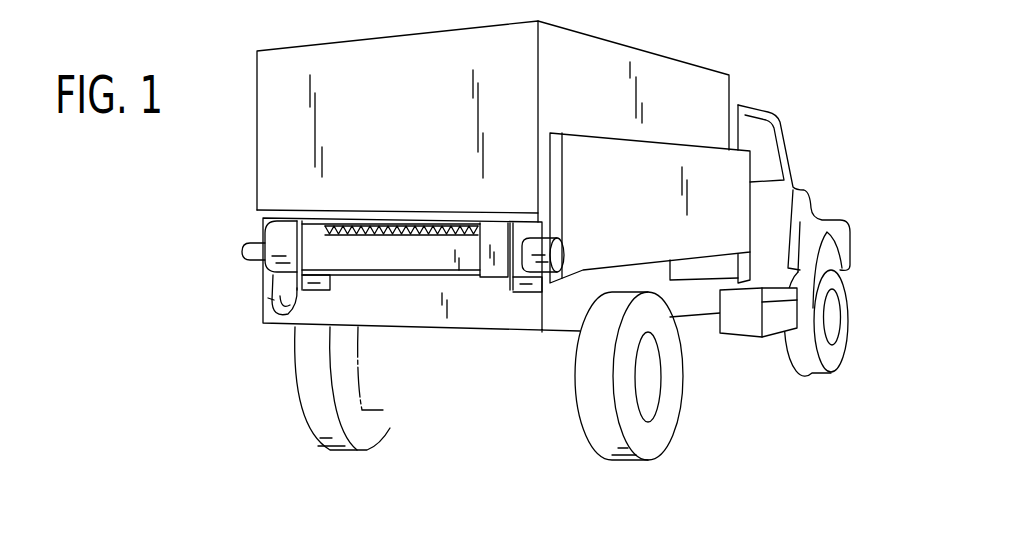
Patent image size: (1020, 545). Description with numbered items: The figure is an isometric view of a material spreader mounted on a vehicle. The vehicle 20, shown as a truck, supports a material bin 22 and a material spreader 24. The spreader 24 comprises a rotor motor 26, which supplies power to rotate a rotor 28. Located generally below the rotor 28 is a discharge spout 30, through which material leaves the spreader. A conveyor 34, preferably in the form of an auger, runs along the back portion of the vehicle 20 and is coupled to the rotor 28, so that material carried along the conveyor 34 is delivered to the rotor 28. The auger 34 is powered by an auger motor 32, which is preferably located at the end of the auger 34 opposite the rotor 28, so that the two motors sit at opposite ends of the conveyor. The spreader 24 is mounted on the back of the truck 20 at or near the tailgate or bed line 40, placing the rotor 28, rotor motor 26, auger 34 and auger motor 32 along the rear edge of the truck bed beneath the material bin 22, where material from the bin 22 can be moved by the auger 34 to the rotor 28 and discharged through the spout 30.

The vehicle 20 is at (228, 57).
The material bin 22 is at (517, 83).
The material spreader 24 is at (258, 221).
The rotor motor 26 is at (250, 252).
The rotor 28 is at (263, 267).
The discharge spout 30 is at (262, 308).
The auger motor 32 is at (559, 252).
The conveyor 34 is at (377, 225).
The tailgate or bed line 40 is at (263, 227).